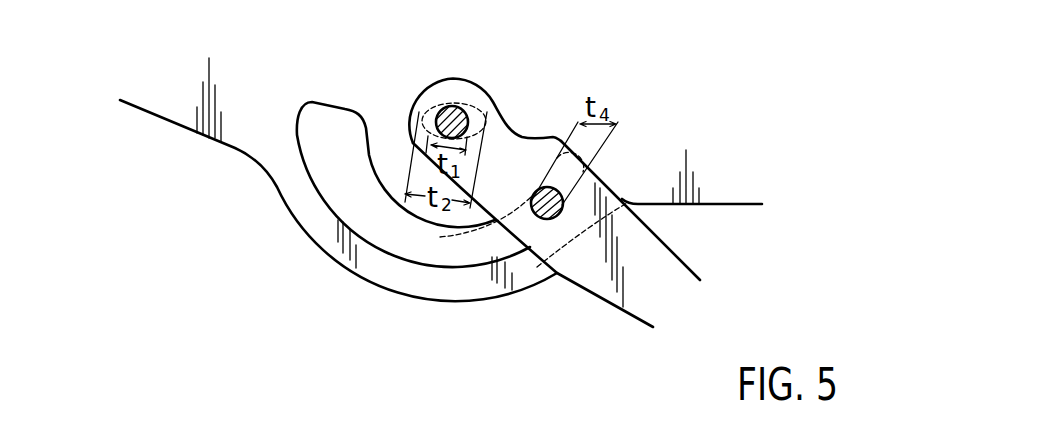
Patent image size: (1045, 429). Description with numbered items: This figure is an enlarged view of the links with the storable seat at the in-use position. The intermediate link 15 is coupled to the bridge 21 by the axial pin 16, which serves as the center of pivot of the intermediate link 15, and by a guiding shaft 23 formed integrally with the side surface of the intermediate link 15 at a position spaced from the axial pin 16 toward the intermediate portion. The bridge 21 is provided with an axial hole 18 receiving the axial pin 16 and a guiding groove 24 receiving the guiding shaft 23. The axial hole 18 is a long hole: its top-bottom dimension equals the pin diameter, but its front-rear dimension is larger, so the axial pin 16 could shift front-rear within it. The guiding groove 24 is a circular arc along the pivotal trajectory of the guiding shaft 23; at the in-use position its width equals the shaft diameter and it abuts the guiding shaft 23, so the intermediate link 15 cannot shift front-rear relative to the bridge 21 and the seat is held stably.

The intermediate link 15 is at (648, 290).
The axial pin 16 is at (446, 118).
The axial hole 18 is at (497, 112).
The bridge 21 is at (723, 180).
The guiding shaft 23 is at (543, 212).
The guiding groove 24 is at (402, 253).